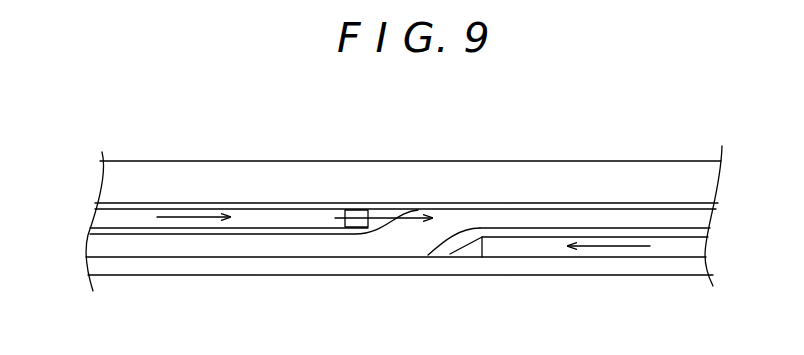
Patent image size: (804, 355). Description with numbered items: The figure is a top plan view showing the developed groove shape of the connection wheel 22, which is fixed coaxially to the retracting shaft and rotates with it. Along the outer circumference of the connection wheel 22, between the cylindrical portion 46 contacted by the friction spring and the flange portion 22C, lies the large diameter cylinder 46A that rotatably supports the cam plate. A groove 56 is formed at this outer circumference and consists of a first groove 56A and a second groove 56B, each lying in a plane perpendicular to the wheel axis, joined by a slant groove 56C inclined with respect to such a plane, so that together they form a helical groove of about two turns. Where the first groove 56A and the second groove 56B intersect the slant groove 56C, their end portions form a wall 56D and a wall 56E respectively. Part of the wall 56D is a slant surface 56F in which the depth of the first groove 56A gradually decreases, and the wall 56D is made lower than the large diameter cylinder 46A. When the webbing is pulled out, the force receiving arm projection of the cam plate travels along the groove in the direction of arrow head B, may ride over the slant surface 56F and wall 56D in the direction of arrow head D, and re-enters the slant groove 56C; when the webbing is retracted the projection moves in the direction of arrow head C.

The connection wheel 22 is at (504, 110).
The flange portion 22C is at (202, 275).
The cylindrical portion 46 is at (247, 172).
The large diameter cylinder 46A is at (575, 202).
The groove 56 is at (610, 218).
The first groove 56A is at (135, 217).
The second groove 56B is at (293, 247).
The slant groove 56C is at (435, 232).
The wall 56D is at (392, 215).
The wall 56E is at (445, 245).
The slant surface 56F is at (357, 215).
The arrow head B is at (188, 220).
The arrow head C is at (612, 247).
The arrow head D is at (415, 213).